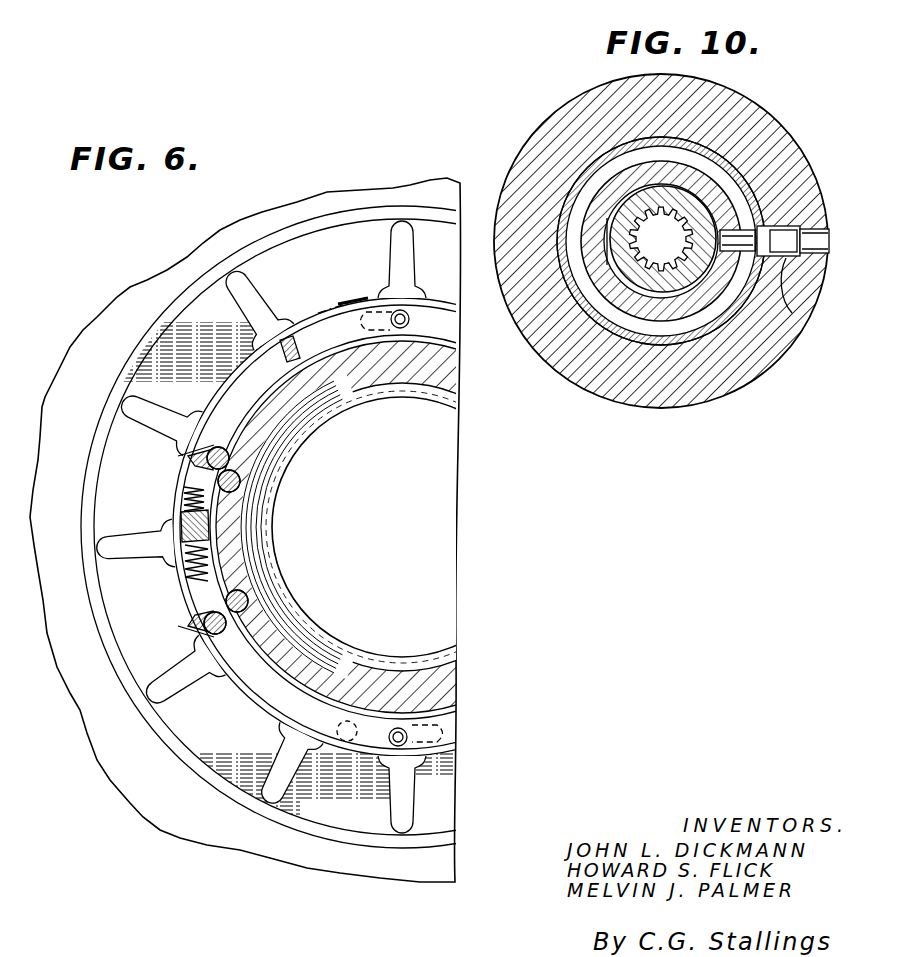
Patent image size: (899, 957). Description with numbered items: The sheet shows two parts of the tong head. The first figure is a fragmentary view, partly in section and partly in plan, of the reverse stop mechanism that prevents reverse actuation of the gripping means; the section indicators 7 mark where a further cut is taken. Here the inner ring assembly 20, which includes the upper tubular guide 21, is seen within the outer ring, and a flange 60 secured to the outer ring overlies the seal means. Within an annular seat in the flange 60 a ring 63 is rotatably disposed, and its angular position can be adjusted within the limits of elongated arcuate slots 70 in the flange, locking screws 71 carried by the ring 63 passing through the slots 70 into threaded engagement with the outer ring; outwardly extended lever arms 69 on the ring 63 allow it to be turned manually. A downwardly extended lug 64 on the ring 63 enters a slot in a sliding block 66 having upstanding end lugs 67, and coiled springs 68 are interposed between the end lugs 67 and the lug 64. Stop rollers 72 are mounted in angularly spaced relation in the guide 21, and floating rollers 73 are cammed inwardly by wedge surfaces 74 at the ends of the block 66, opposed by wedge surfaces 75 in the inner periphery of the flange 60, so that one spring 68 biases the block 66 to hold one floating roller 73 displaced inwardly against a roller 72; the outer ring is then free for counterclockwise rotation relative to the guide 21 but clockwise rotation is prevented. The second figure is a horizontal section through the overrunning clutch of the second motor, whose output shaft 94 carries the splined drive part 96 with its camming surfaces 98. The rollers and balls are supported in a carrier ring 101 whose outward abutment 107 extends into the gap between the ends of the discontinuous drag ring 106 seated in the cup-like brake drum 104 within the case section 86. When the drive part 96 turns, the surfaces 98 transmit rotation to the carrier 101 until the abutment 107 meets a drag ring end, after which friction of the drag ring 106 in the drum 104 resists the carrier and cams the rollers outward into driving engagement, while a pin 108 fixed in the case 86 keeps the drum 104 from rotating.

In FIG. 6, the flange 60 is at (318, 243).
In FIG. 6, the lever arms 69 is at (428, 237).
In FIG. 6, the section line 7 is at (357, 300).
In FIG. 6, the elongated arcuate slots 70 is at (384, 312).
In FIG. 6, the locking screws 71 is at (410, 321).
In FIG. 6, the ring 63 is at (302, 343).
In FIG. 6, the floating rollers 73 is at (217, 413).
In FIG. 6, the end lugs 67 is at (190, 470).
In FIG. 6, the coiled springs 68 is at (185, 496).
In FIG. 6, the lug 64 is at (182, 518).
In FIG. 6, the sliding block 66 is at (190, 558).
In FIG. 6, the wedge surfaces 75 is at (229, 448).
In FIG. 6, the rollers 72 is at (241, 485).
In FIG. 6, the wedge surfaces 74 is at (248, 562).
In FIG. 6, the upper tubular guide 21 is at (372, 397).
In FIG. 6, the inner ring assembly 20 is at (430, 400).
In FIG. 10, the case section 86 is at (557, 126).
In FIG. 10, the drive part 96 is at (576, 358).
In FIG. 10, the brake drum 104 is at (606, 158).
In FIG. 10, the drag ring 106 is at (707, 163).
In FIG. 10, the output shaft 94 is at (641, 289).
In FIG. 10, the camming surfaces 98 is at (664, 273).
In FIG. 10, the abutment 107 is at (760, 226).
In FIG. 10, the carrier ring 101 is at (736, 222).
In FIG. 10, the pin 108 is at (792, 313).